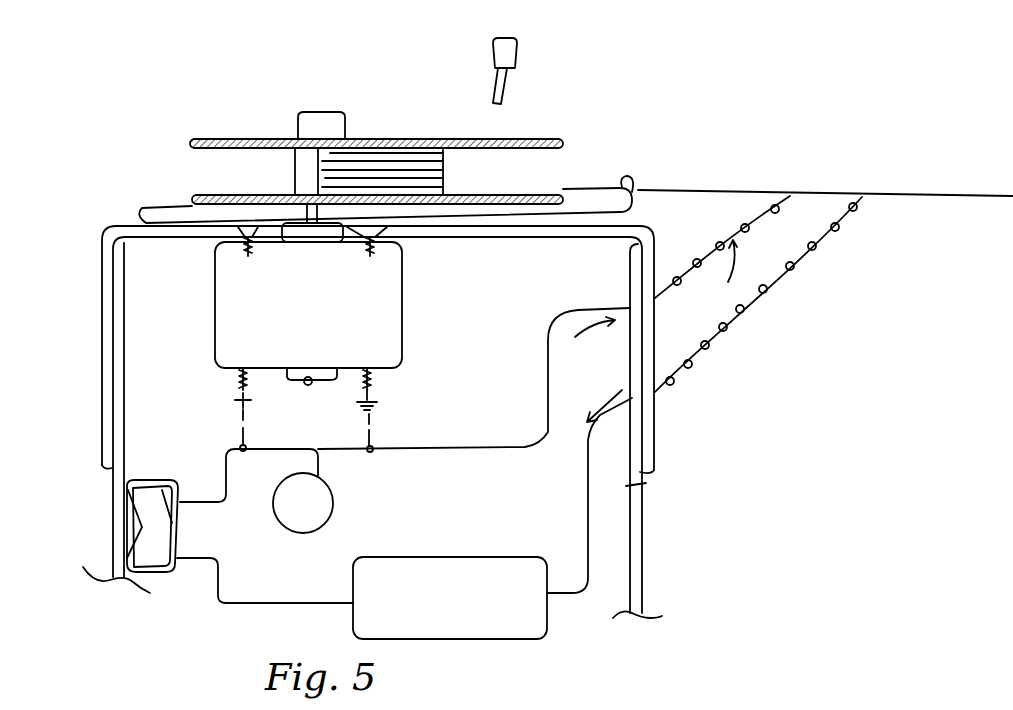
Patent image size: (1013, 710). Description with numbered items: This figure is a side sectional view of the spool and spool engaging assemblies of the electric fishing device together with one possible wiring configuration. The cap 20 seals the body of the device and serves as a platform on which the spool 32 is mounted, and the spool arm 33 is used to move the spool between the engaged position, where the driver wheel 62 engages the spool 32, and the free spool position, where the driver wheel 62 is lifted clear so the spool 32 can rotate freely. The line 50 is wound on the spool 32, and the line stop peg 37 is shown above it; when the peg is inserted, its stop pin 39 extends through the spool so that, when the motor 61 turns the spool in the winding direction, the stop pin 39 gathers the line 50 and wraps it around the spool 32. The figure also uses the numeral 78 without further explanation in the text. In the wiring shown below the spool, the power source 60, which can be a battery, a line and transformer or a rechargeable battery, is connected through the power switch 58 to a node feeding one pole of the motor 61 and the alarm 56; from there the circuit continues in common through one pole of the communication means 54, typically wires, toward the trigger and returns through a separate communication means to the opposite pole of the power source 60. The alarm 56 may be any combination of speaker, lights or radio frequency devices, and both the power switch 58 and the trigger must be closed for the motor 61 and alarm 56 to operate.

The cap 20 is at (113, 220).
The spool arm 33 is at (153, 212).
The spool 32 is at (498, 137).
The line 50 is at (450, 173).
The driver wheel 62 is at (347, 130).
The axle 78 is at (297, 207).
The line stop peg 37 is at (525, 57).
The stop pin 39 is at (515, 92).
The motor 61 is at (402, 290).
The alarm 56 is at (335, 503).
The power source 60 is at (478, 622).
The power switch 58 is at (160, 540).
The communication means 54 is at (753, 283).